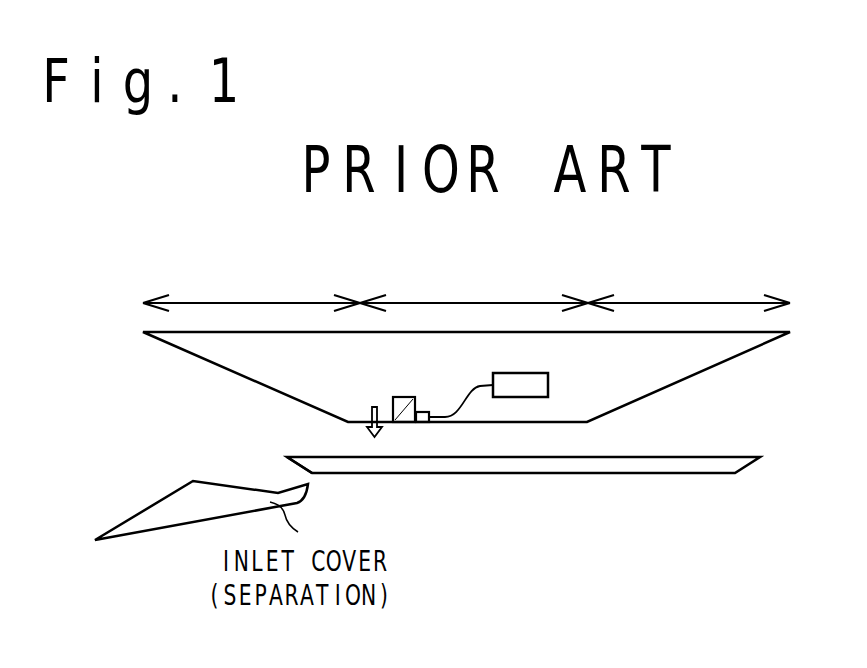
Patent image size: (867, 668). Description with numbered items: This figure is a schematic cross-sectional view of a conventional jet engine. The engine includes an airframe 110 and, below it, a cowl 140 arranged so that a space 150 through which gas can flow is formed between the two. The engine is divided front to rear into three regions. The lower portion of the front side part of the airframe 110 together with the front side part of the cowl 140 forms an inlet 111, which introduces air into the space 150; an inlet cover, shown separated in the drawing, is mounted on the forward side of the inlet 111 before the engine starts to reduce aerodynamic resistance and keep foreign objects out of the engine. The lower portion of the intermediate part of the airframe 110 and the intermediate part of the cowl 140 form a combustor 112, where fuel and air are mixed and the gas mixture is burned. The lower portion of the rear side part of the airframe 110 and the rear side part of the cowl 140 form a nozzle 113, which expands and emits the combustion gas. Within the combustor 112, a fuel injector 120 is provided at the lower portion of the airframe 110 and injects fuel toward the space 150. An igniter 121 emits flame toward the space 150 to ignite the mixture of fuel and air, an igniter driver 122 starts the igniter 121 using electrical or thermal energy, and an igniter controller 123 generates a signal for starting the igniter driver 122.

The airframe 110 is at (640, 387).
The inlet 111 is at (251, 286).
The combustor 112 is at (474, 286).
The nozzle 113 is at (689, 286).
The fuel injector 120 is at (372, 408).
The igniter 121 is at (406, 398).
The igniter driver 122 is at (420, 411).
The igniter controller 123 is at (548, 385).
The cowl 140 is at (653, 463).
The space 150 is at (318, 450).